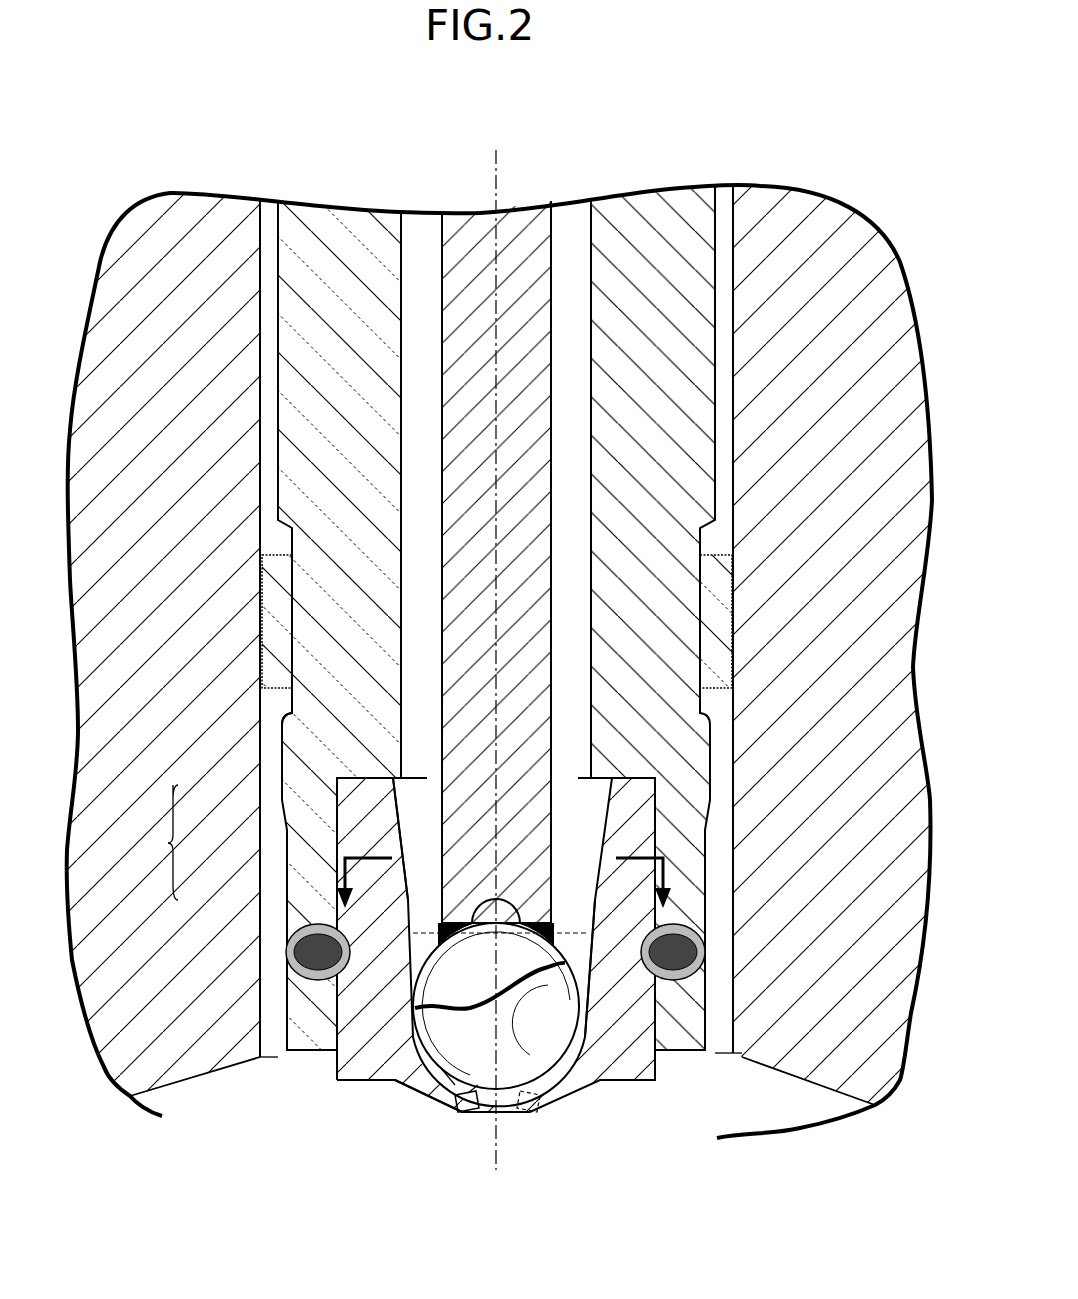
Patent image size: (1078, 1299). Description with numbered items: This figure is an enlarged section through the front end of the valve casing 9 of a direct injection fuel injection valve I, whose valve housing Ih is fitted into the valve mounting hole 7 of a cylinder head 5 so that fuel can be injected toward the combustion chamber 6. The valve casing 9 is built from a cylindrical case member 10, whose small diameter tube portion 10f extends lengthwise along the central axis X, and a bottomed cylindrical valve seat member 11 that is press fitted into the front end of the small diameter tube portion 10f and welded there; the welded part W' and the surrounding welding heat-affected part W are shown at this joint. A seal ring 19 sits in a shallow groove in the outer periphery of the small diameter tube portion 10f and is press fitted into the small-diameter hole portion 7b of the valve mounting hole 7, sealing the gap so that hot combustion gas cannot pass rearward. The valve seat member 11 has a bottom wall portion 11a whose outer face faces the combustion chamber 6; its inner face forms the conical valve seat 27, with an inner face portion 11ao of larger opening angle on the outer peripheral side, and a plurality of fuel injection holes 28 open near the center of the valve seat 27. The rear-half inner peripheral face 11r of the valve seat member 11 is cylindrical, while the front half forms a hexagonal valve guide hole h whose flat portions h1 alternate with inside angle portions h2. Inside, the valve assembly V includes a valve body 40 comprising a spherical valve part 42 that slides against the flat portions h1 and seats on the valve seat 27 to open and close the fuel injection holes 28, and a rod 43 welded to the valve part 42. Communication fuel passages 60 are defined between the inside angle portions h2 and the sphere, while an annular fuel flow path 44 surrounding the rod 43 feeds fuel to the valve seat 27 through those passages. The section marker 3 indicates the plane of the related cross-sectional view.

The cylinder head 5 is at (167, 672).
The combustion chamber 6 is at (746, 1118).
The valve mounting hole 7 is at (722, 852).
The small-diameter hole portion 7b is at (260, 962).
The fuel injection valve I is at (266, 424).
The valve casing 9 is at (226, 606).
The case member 10 is at (280, 327).
The small diameter tube portion 10f is at (298, 753).
The seal ring 19 is at (273, 612).
The valve assembly V is at (551, 277).
The central axis X is at (496, 150).
The valve seat member 11 is at (336, 1065).
The valve housing Ih is at (716, 351).
The fuel flow path 44 is at (568, 610).
The valve body 40 is at (395, 945).
The rod 43 is at (460, 705).
The valve part 42 is at (440, 990).
The rear-half inner peripheral face 11r is at (604, 812).
The bottom wall portion 11a is at (600, 1073).
The inner face portion on the outer peripheral side 11ao is at (427, 1070).
The communication fuel passage 60 is at (585, 998).
The flat portion h1 is at (443, 1037).
The valve guide hole h is at (430, 900).
The inside angle portion h2 is at (573, 1063).
The valve seat 27 is at (464, 1056).
The fuel injection hole 28 is at (477, 1110).
The welding heat-affected part W is at (545, 945).
The welded part W' is at (723, 973).
The section line 3- 3 is at (501, 877).